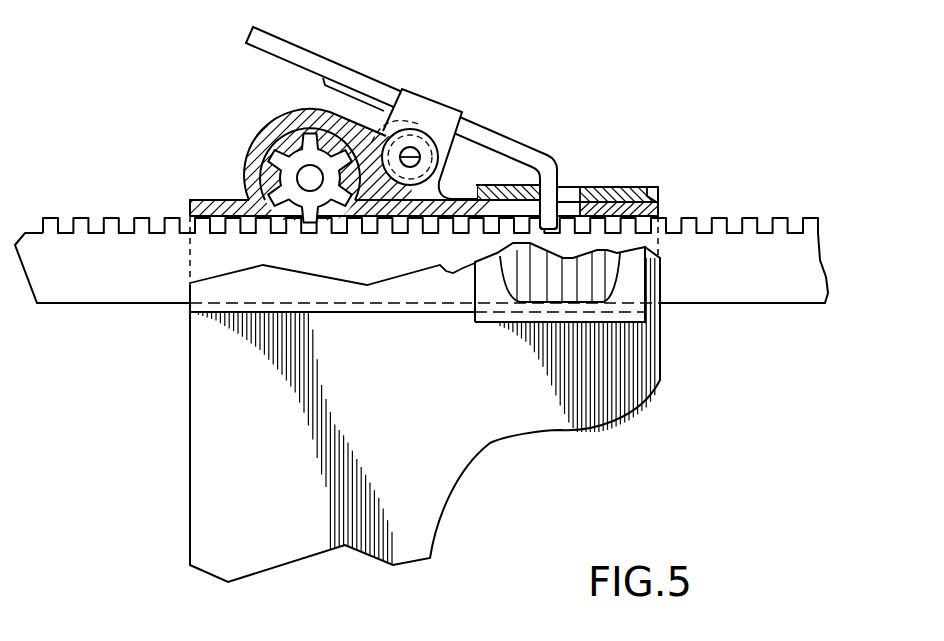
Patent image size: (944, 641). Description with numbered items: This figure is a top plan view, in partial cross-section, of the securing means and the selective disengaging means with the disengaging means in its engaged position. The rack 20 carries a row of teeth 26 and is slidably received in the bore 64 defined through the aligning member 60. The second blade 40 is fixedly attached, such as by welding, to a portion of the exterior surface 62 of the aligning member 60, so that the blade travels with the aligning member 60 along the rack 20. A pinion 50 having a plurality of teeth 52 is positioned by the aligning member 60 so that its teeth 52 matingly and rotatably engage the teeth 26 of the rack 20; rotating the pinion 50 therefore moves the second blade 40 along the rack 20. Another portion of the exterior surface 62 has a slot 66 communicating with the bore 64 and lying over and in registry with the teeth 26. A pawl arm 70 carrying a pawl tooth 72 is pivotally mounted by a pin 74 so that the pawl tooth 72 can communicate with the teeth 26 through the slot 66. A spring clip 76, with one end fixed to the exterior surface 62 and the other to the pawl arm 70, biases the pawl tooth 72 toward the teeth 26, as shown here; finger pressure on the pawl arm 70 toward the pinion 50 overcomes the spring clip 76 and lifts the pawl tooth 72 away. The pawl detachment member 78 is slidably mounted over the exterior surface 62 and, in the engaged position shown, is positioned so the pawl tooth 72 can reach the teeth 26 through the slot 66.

The rack 20 is at (822, 262).
The teeth 26 is at (750, 218).
The second blade 40 is at (500, 422).
The pinion 50 is at (303, 170).
The teeth 52 is at (272, 170).
The aligning member 60 is at (662, 205).
The exterior surface 62 is at (652, 291).
The bore 64 is at (203, 293).
The slot 66 is at (574, 185).
The pawl arm 70 is at (429, 128).
The pawl tooth 72 is at (554, 163).
The pin 74 is at (412, 150).
The spring clip 76 is at (392, 136).
The pawl detachment member 78 is at (641, 186).